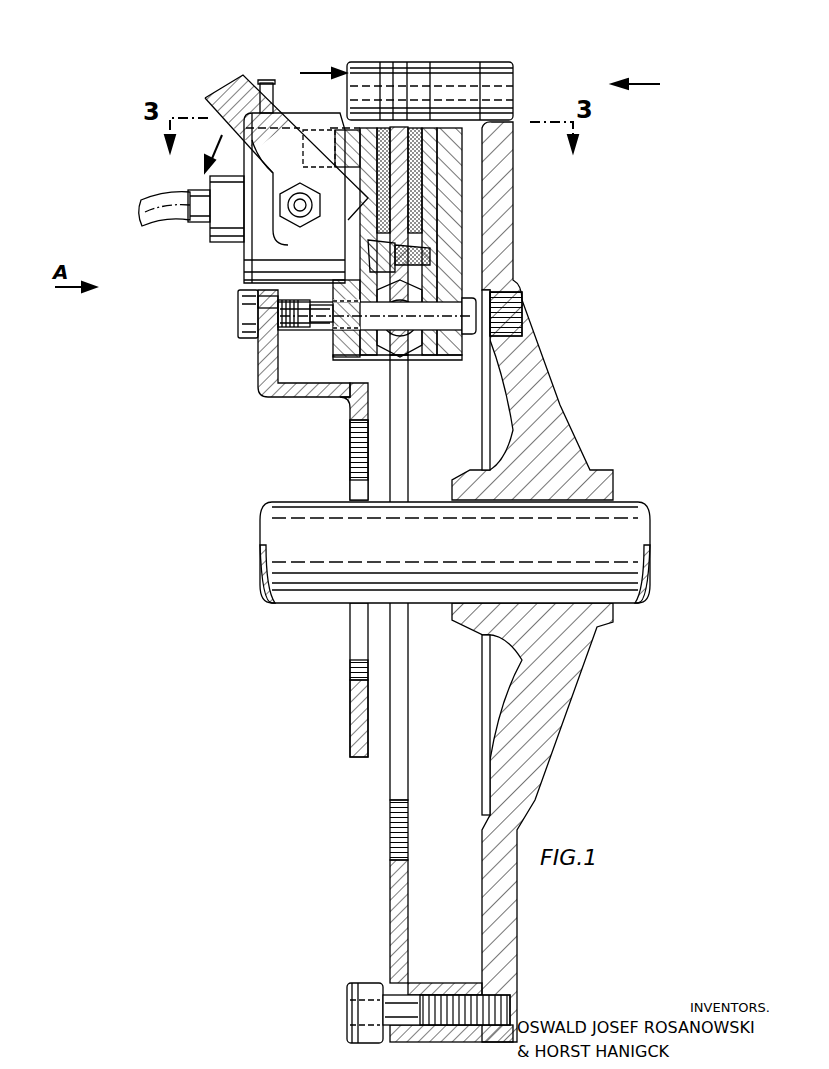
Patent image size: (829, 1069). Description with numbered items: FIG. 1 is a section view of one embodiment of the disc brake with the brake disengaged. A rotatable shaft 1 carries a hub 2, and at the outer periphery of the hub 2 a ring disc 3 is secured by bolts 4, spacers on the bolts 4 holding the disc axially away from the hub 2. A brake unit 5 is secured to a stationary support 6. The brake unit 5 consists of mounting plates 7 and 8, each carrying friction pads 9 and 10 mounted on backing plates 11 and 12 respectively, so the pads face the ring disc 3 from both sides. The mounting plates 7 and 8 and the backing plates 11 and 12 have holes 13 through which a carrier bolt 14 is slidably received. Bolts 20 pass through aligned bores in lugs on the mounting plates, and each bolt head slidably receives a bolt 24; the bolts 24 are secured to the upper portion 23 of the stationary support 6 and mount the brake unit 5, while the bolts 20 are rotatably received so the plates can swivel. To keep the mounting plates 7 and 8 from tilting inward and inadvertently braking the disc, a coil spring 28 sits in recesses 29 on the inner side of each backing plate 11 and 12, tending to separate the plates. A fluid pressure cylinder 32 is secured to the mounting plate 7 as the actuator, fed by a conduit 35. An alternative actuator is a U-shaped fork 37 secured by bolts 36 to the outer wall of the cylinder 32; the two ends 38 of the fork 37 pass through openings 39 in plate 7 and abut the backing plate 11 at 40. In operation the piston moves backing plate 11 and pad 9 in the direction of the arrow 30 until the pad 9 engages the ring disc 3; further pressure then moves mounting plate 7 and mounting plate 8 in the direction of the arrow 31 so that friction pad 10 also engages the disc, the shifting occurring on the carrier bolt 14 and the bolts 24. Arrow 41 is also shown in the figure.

The rotatable shaft 1 is at (275, 530).
The hub 2 is at (548, 702).
The ring disc 3 is at (400, 125).
The bolts 4 is at (510, 72).
The brake unit 5 is at (462, 175).
The stationary support 6 is at (352, 703).
The mounting plate 7 is at (348, 342).
The mounting plate 8 is at (440, 337).
The friction pad 9 is at (383, 128).
The friction pad 10 is at (415, 128).
The backing plate 11 is at (355, 130).
The backing plate 12 is at (432, 140).
The holes 13 is at (335, 318).
The carrier bolt 14 is at (455, 318).
The bolts 20 is at (397, 368).
The upper portion 23 is at (268, 350).
The bolts 24 is at (248, 325).
The coil spring 28 is at (428, 268).
The recesses 29 is at (410, 258).
The arrow 30 is at (309, 61).
The arrow 31 is at (677, 85).
The fluid pressure cylinder 32 is at (244, 233).
The conduit 35 is at (185, 198).
The bolts 36 is at (293, 200).
The U-shaped fork 37 is at (245, 103).
The ends 38 is at (355, 232).
The openings 39 is at (332, 165).
The abutment point 40 is at (265, 268).
The direction arrow 41 is at (220, 143).